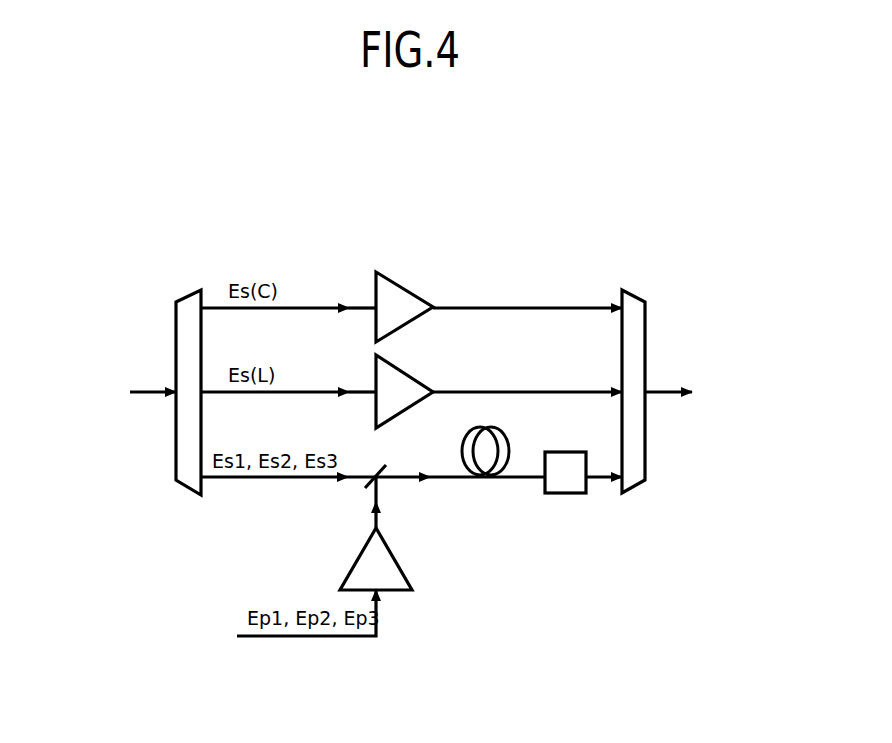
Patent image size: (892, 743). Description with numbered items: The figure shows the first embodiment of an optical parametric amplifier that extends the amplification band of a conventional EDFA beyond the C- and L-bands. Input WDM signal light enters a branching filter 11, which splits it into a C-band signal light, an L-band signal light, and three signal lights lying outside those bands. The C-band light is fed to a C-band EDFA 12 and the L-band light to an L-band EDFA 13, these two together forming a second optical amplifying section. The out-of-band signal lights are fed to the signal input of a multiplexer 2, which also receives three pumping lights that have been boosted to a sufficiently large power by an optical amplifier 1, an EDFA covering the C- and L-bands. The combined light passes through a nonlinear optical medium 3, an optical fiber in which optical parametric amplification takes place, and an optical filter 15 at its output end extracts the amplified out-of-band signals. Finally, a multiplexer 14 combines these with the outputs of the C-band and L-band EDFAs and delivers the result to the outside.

The optical amplifier 1 is at (393, 548).
The multiplexer 2 is at (374, 470).
The nonlinear optical medium 3 is at (507, 438).
The branching filter 11 is at (190, 292).
The C-band EDFA 12 is at (418, 293).
The L-band EDFA 13 is at (418, 378).
The multiplexer 14 is at (632, 293).
The optical filter 15 is at (560, 495).